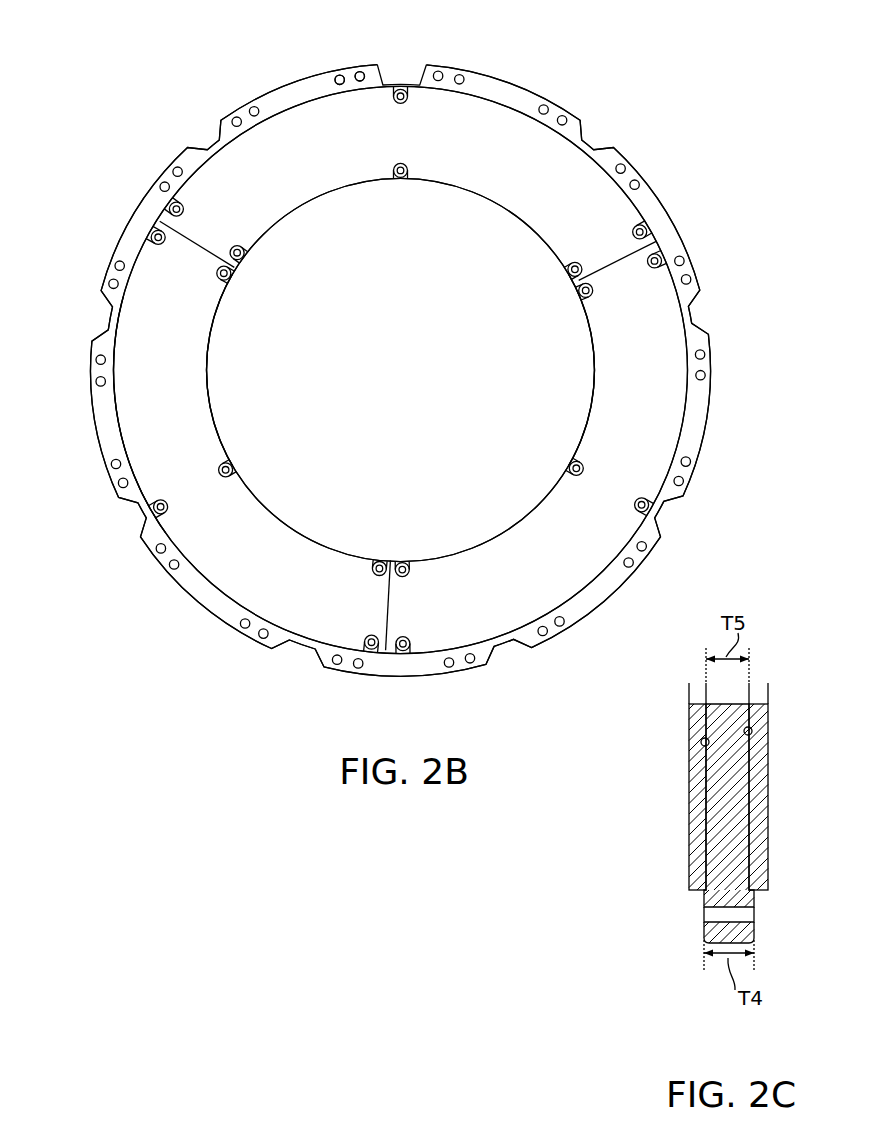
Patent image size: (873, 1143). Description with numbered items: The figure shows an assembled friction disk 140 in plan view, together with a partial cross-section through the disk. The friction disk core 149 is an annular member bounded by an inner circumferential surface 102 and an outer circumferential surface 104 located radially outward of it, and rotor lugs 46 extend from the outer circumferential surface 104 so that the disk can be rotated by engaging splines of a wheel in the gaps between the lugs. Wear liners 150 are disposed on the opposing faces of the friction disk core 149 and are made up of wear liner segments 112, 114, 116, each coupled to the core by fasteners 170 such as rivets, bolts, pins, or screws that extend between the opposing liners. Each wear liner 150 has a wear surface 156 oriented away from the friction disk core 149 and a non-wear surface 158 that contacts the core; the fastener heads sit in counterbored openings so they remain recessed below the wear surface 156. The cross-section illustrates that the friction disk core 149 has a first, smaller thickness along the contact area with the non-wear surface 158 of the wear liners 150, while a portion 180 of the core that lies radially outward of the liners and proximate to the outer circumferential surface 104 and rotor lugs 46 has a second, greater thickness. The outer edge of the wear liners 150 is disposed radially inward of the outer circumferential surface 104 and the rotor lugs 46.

In FIG. 2B, the friction disk 140 is at (127, 67).
In FIG. 2B, the rotor lugs 46 is at (293, 62).
In FIG. 2B, the wear liner segment 114 is at (327, 113).
In FIG. 2B, the outer circumferential surface 104 is at (392, 80).
In FIG. 2C, the outer circumferential surface 104 is at (713, 940).
In FIG. 2B, the wear surface 156 is at (258, 216).
In FIG. 2B, the inner circumferential surface 102 is at (360, 183).
In FIG. 2B, the fasteners 170 is at (152, 242).
In FIG. 2B, the wear liners 150 is at (211, 417).
In FIG. 2C, the wear liners 150 is at (695, 808).
In FIG. 2B, the wear liner segment 116 is at (592, 392).
In FIG. 2B, the wear liner segment 112 is at (130, 428).
In FIG. 2B, the friction disk core 149 is at (690, 440).
In FIG. 2C, the friction disk core 149 is at (728, 765).
In FIG. 2C, the non-wear surface 158 is at (709, 750).
In FIG. 2C, the portion of friction disk core 180 is at (752, 903).